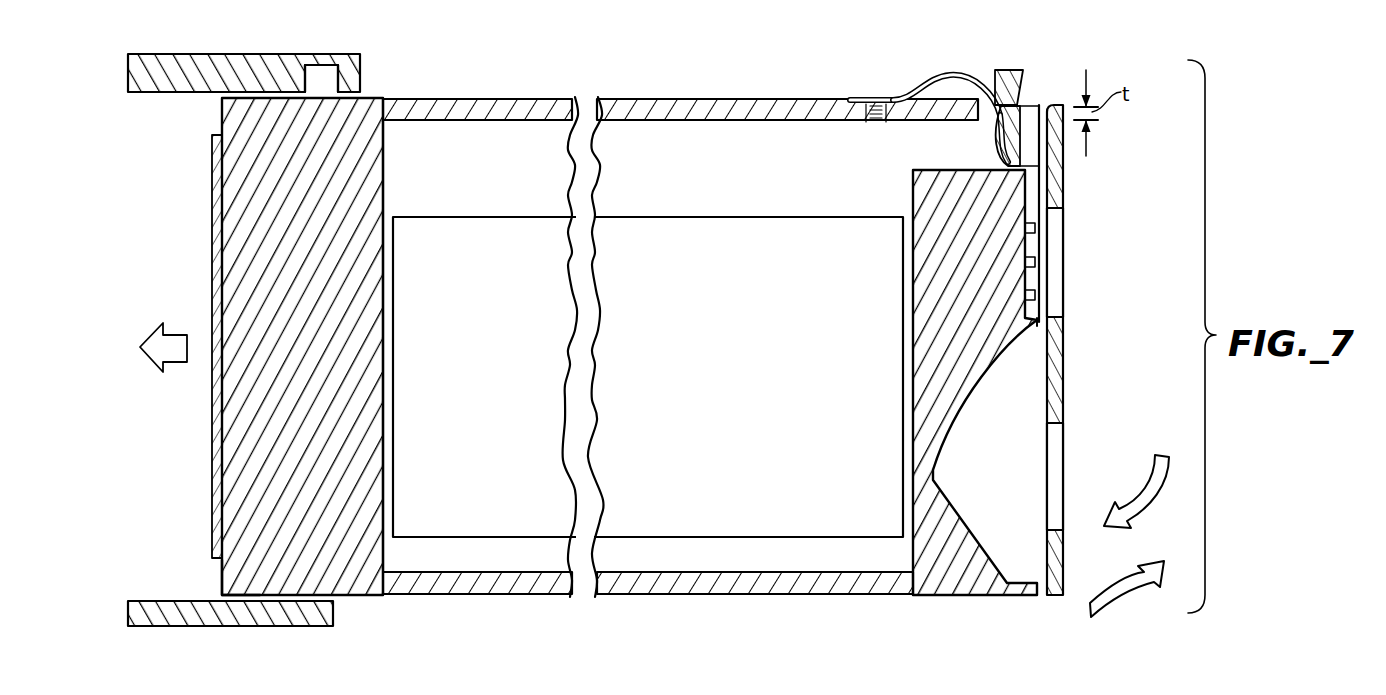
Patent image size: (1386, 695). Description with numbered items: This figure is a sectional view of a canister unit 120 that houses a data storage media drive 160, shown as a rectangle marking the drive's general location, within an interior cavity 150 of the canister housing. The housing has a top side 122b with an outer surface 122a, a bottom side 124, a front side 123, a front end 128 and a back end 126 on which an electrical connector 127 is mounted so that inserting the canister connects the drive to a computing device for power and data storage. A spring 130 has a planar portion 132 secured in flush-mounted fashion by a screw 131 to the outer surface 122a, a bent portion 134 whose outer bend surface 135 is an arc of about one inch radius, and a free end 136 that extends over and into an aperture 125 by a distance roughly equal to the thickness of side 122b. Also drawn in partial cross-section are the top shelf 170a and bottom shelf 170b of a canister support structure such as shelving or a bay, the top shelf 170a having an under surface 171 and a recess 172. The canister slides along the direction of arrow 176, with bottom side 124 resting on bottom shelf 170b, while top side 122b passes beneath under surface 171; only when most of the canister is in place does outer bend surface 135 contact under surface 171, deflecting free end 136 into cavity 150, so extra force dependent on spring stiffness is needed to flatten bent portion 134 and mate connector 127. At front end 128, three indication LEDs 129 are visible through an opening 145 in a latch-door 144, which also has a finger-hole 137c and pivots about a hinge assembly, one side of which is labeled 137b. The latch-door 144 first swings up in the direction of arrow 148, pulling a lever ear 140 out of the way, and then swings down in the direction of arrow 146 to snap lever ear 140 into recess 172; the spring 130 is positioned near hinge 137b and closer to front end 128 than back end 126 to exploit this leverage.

The canister unit 120 is at (535, 96).
The outer surface 122a is at (672, 96).
The canister housing top side 122b is at (725, 121).
The front side 123 is at (1007, 346).
The bottom side 124 is at (815, 597).
The aperture 125 is at (990, 125).
The back end 126 is at (221, 571).
The electrical connector 127 is at (212, 215).
The front end 128 is at (1042, 324).
The indication LEDs 129 is at (1025, 295).
The spring 130 is at (909, 81).
The screw 131 is at (878, 100).
The planar portion 132 is at (862, 100).
The bent portion 134 is at (950, 58).
The outer bend surface 135 is at (974, 68).
The free end 136 is at (1003, 140).
The pivot/hinge-assembly 137b is at (1041, 160).
The finger-hole 137c is at (1063, 446).
The lever ear 140 is at (1016, 70).
The latch-door 144 is at (1058, 198).
The opening 145 is at (1058, 260).
The arrow 146 is at (1152, 506).
The arrow 148 is at (1132, 612).
The interior cavity 150 is at (592, 346).
The data storage media drive 160 is at (717, 215).
The top shelf 170a is at (218, 54).
The bottom shelf 170b is at (158, 601).
The under surface 171 is at (158, 94).
The recess 172 is at (323, 78).
The arrow 176 is at (153, 372).